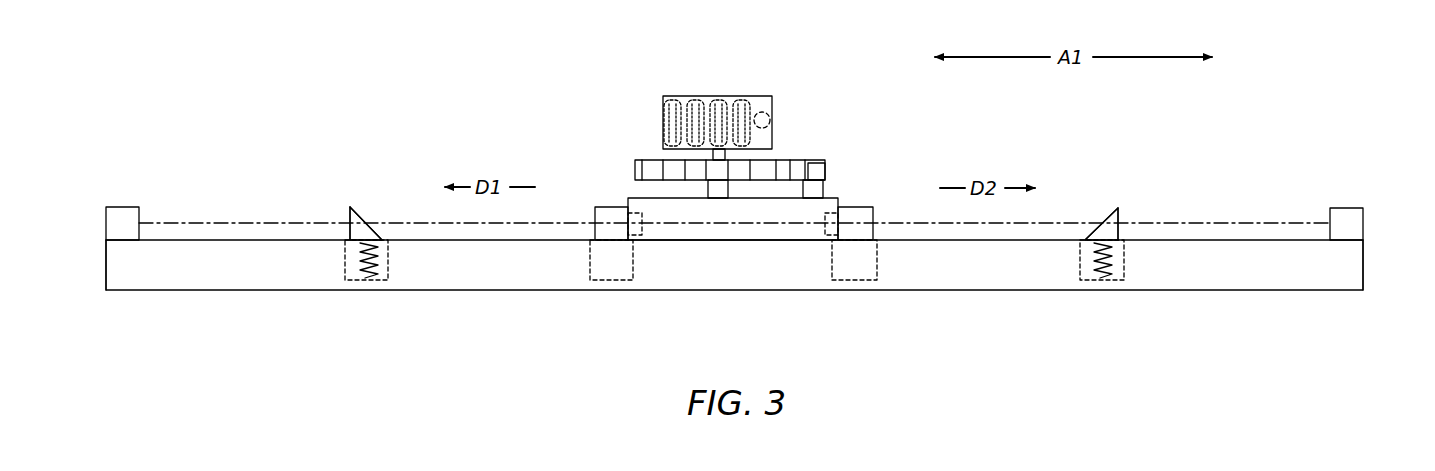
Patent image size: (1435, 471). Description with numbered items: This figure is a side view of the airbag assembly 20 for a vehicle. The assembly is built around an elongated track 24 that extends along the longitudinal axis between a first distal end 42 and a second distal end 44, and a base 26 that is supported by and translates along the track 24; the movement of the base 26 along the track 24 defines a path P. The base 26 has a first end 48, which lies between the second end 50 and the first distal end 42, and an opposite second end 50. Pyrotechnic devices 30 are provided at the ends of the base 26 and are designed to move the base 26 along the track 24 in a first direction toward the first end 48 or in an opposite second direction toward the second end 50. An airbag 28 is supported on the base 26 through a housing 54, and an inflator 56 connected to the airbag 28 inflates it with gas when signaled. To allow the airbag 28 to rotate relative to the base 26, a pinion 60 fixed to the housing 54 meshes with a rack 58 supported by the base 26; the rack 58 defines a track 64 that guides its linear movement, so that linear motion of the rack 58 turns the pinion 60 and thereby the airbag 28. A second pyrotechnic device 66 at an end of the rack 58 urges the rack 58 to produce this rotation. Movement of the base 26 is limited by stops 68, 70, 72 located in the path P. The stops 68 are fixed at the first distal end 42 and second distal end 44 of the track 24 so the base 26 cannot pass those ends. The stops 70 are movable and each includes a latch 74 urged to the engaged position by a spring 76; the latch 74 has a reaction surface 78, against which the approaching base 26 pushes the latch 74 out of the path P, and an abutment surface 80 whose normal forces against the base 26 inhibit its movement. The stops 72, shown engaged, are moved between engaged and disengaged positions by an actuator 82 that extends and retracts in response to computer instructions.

The airbag assembly 20 is at (276, 70).
The track 24 is at (500, 262).
The base 26 is at (733, 223).
The airbag 28 is at (690, 96).
The pyrotechnic device 30 is at (642, 226).
The first distal end 42 is at (106, 253).
The second distal end 44 is at (1365, 258).
The first end 48 is at (724, 173).
The second end 50 is at (838, 205).
The housing 54 is at (722, 97).
The inflator 56 is at (770, 118).
The rack 58 is at (815, 165).
The pinion 60 is at (653, 160).
The track 64 is at (823, 190).
The second pyrotechnic device 66 is at (825, 172).
The stop 68 is at (120, 207).
The stop 70 is at (351, 205).
The stop 72 is at (598, 207).
The latch 74 is at (358, 231).
The spring 76 is at (360, 268).
The reaction surface 78 is at (368, 230).
The abutment surface 80 is at (348, 215).
The actuator 82 is at (603, 280).
The path P is at (1263, 223).